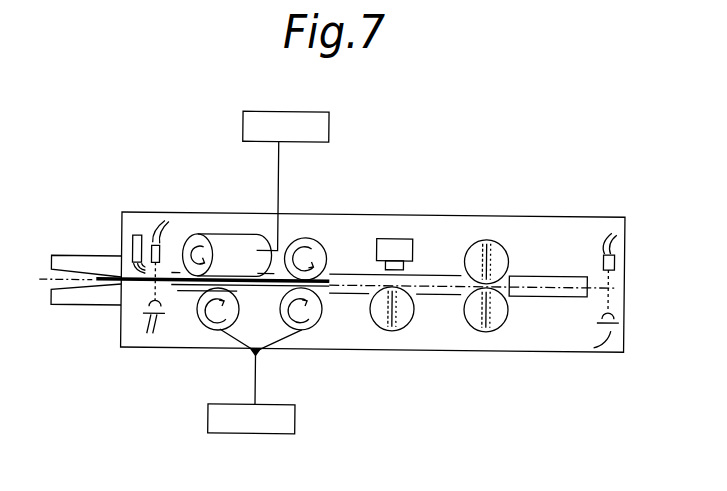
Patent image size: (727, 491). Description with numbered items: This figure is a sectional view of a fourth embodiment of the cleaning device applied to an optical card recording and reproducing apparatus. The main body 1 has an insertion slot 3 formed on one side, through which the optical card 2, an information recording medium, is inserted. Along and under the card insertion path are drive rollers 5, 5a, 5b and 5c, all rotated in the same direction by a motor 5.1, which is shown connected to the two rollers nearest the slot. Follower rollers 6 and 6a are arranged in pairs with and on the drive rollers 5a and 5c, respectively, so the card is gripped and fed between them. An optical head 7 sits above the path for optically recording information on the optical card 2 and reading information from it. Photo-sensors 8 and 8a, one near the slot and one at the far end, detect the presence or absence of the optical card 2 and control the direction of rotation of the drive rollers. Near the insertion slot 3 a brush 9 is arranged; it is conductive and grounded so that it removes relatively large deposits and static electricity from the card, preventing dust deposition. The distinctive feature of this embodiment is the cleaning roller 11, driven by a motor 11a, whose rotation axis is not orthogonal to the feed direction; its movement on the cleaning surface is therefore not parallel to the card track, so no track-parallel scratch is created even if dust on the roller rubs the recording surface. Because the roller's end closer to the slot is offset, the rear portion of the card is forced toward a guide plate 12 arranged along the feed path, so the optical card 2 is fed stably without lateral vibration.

The main body 1 is at (563, 212).
The optical card 2 is at (267, 283).
The insertion slot 3 is at (78, 266).
The drive roller 5 is at (220, 329).
The drive roller 5a is at (303, 328).
The drive roller 5b is at (392, 328).
The drive roller 5c is at (487, 328).
The motor 5.1 is at (230, 433).
The follower roller 6 is at (317, 236).
The follower roller 6a is at (488, 236).
The optical head 7 is at (400, 236).
The photo-sensor 8 is at (161, 246).
The photo-sensor 8a is at (617, 257).
The brush 9 is at (139, 235).
The cleaning roller 11 is at (233, 243).
The motor 11a is at (257, 106).
The guide plate 12 is at (555, 287).